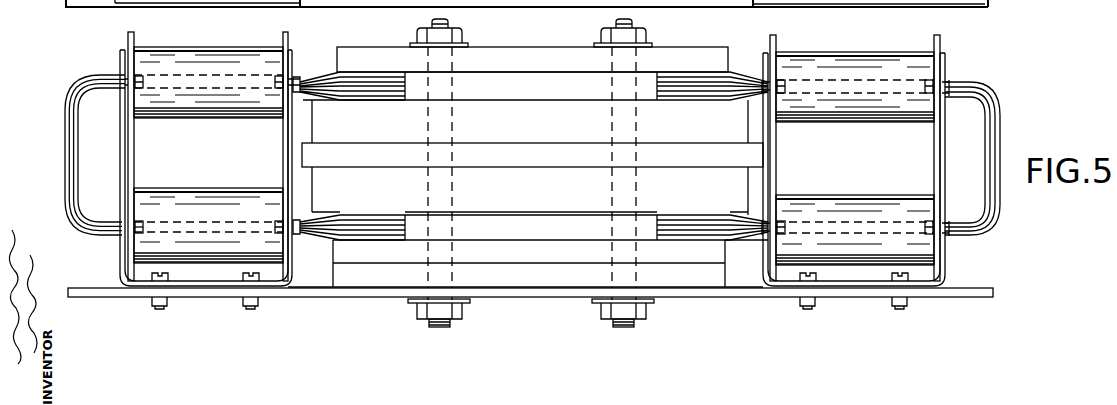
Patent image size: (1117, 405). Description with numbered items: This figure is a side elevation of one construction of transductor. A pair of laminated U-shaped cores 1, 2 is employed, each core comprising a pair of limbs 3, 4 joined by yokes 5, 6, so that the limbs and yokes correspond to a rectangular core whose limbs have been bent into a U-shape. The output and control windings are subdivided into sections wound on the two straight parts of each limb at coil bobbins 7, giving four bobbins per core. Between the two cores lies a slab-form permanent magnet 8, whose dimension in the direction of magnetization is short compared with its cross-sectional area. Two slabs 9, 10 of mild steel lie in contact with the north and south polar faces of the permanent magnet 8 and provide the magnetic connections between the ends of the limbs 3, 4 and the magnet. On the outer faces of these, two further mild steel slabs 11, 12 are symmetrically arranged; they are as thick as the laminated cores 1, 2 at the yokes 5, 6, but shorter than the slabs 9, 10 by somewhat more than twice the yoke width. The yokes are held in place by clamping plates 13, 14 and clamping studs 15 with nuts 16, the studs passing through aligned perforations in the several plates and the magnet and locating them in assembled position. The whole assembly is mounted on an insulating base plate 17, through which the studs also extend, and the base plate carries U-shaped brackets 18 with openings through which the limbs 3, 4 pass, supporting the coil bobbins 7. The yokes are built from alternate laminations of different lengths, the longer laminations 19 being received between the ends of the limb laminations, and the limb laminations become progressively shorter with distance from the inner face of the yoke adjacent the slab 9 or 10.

The U-shaped core 1 is at (60, 249).
The U-shaped core 2 is at (996, 268).
The limb 3 is at (80, 92).
The limb 4 is at (993, 108).
The yoke 5 is at (357, 72).
The yoke 6 is at (340, 243).
The coil bobbin 7 is at (205, 61).
The permanent magnet 8 is at (472, 150).
The slab 9 is at (520, 103).
The slab 10 is at (528, 206).
The slab 11 is at (560, 77).
The slab 12 is at (553, 254).
The clamping plate 13 is at (944, 63).
The clamping plate 14 is at (702, 278).
The clamping stud 15 is at (448, 312).
The nut 16 is at (458, 37).
The base plate 17 is at (98, 290).
The U-shaped bracket 18 is at (118, 250).
The longer lamination 19 is at (370, 232).